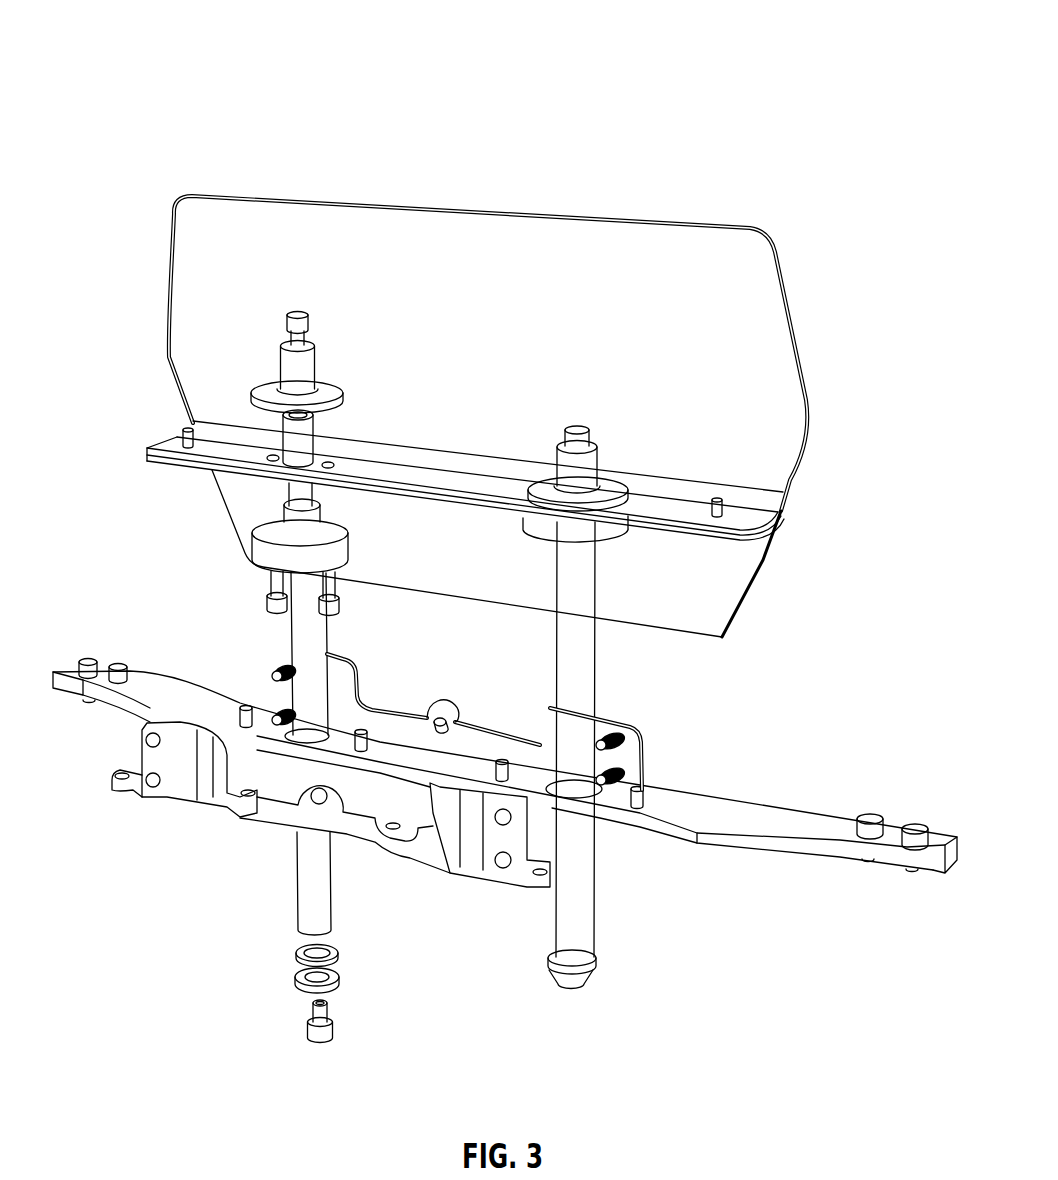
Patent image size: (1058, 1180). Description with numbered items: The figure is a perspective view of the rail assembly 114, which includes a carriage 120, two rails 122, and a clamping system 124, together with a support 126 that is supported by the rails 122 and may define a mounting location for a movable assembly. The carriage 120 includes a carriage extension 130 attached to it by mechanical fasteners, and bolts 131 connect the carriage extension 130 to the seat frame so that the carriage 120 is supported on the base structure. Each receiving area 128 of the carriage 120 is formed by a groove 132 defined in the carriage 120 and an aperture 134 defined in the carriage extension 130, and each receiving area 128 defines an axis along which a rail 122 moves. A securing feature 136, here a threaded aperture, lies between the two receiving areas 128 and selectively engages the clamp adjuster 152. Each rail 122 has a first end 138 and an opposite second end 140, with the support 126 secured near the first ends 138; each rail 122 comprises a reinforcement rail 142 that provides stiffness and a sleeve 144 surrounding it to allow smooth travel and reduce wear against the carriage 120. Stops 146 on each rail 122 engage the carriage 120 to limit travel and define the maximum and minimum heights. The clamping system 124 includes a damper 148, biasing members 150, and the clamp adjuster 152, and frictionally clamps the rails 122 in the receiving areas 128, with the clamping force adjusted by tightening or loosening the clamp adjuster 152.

The rail assembly 114 is at (131, 54).
The carriage 120 is at (319, 789).
The rail 122 is at (446, 739).
The clamping system 124 is at (536, 768).
The support 126 is at (414, 248).
The receiving area 128 is at (331, 789).
The carriage extension 130 is at (812, 832).
The bolt 131 is at (92, 661).
The groove 132 is at (185, 792).
The aperture 134 is at (288, 740).
The securing feature 136 is at (320, 805).
The first end 138 is at (343, 396).
The second end 140 is at (296, 932).
The reinforcement rail 142 is at (283, 497).
The sleeve 144 is at (297, 620).
The stop 146 is at (345, 557).
The damper 148 is at (643, 768).
The biasing member 150 is at (617, 738).
The clamp adjuster 152 is at (441, 700).